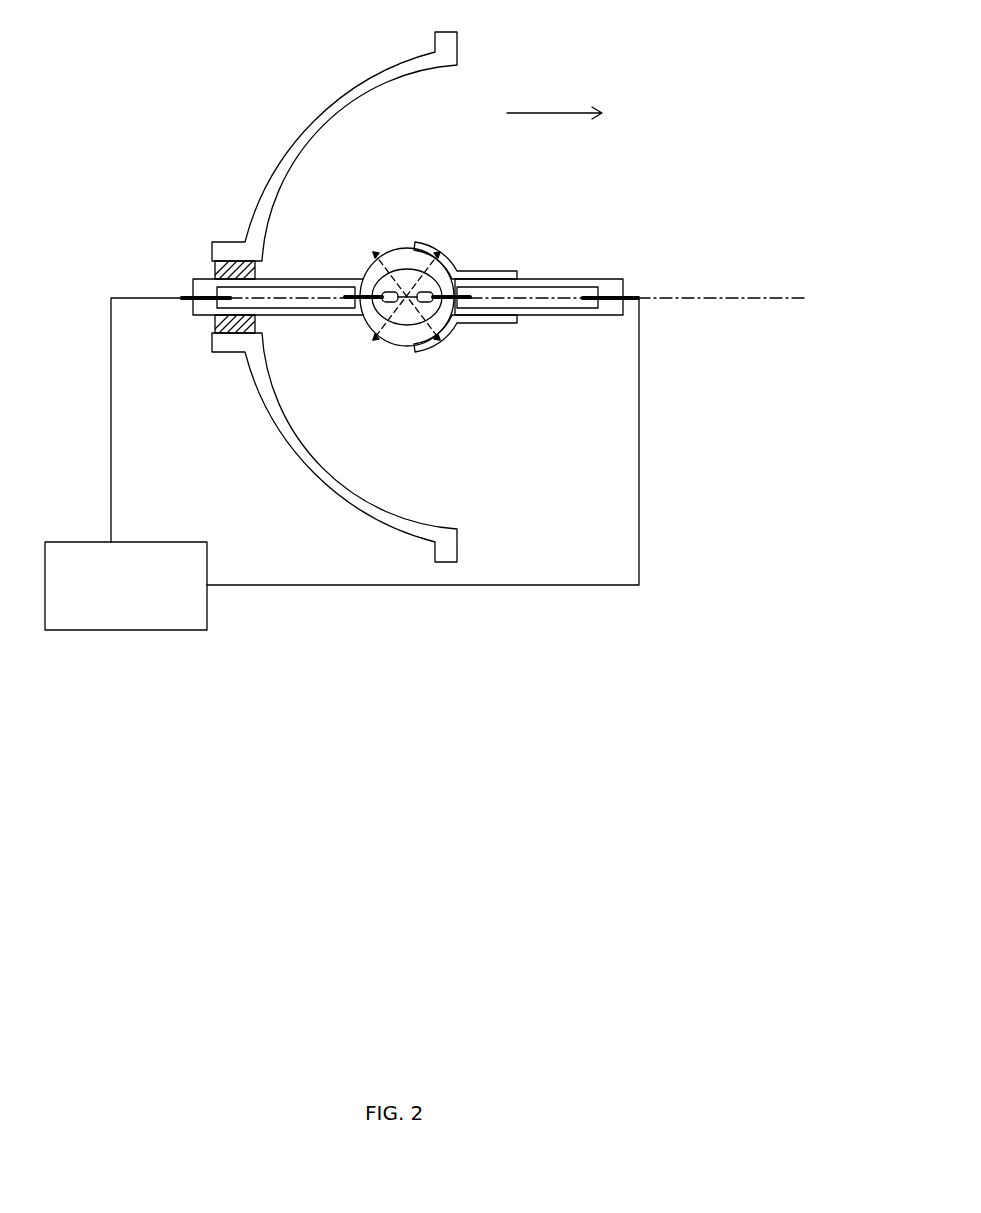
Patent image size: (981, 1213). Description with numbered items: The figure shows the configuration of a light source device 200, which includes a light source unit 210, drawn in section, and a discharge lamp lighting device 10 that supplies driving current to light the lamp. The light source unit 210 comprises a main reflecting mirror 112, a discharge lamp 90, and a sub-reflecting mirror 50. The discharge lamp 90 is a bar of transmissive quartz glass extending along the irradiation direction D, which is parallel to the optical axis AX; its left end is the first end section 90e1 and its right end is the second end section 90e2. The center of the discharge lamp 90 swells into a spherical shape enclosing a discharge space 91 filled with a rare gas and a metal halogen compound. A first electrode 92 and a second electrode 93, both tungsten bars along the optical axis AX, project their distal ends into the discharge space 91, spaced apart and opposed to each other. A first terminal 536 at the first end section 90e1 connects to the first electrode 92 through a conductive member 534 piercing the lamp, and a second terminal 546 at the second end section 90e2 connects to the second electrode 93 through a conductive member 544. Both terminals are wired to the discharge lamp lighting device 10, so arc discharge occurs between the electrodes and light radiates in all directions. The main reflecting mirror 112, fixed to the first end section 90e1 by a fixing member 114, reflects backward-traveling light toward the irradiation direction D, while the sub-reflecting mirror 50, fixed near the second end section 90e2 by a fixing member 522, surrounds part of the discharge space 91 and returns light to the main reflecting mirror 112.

The light source device 200 is at (740, 61).
The light source unit 210 is at (321, 297).
The main reflecting mirror 112 is at (327, 118).
The fixing member 114 is at (215, 266).
The discharge lamp lighting device 10 is at (153, 541).
The discharge lamp 90 is at (402, 297).
The first end section 90e1 is at (211, 279).
The second end section 90e2 is at (602, 279).
The sub-reflecting mirror 50 is at (487, 270).
The fixing member 522 is at (522, 278).
The conductive member 534 is at (298, 309).
The first terminal 536 is at (184, 300).
The conductive member 544 is at (542, 309).
The second terminal 546 is at (625, 318).
The discharge space 91 is at (403, 312).
The first electrode 92 is at (368, 326).
The second electrode 93 is at (455, 323).
The optical axis AX is at (741, 297).
The irradiation direction D is at (563, 115).